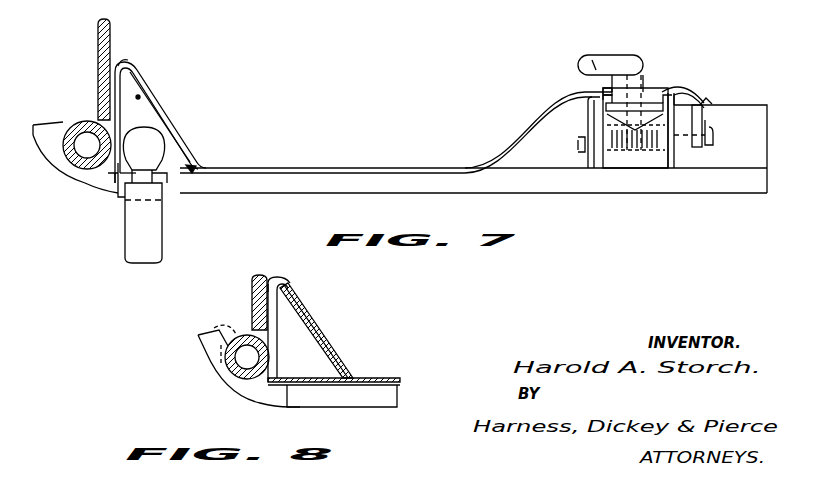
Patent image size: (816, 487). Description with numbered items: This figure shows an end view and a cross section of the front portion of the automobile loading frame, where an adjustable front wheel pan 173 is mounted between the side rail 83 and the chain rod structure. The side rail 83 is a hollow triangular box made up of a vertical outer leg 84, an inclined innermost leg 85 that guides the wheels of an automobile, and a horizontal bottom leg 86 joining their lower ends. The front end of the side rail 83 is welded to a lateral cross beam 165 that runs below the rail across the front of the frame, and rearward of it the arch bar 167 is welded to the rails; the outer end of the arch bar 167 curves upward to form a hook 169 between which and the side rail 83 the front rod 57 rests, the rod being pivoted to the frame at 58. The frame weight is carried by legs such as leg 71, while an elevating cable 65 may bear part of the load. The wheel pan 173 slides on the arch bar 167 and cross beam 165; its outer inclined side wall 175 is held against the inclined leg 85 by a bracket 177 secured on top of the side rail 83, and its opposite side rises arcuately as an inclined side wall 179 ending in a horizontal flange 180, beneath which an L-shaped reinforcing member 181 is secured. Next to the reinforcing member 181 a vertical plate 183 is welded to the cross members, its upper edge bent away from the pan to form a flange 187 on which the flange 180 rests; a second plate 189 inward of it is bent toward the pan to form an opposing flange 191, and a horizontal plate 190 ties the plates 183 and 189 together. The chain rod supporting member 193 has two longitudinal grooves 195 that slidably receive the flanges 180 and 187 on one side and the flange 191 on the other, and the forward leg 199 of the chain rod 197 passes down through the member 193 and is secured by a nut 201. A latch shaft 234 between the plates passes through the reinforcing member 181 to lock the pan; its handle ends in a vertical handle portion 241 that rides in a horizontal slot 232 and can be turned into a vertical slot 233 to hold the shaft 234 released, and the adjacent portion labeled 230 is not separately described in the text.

In FIG. 8, the front rod 57 is at (220, 326).
In FIG. 7, the pivotal connection 58 is at (67, 137).
In FIG. 7, the elevating cable 65 is at (97, 33).
In FIG. 8, the elevating cable 65 is at (252, 290).
In FIG. 7, the leg 71 is at (127, 249).
In FIG. 7, the side rail 83 is at (181, 178).
In FIG. 8, the side rail 83 is at (290, 276).
In FIG. 7, the outer leg 84 is at (114, 74).
In FIG. 8, the outer leg 84 is at (277, 332).
In FIG. 7, the innermost leg 85 is at (136, 78).
In FIG. 8, the innermost leg 85 is at (305, 338).
In FIG. 8, the bottom leg 86 is at (287, 405).
In FIG. 7, the lateral cross beam 165 is at (248, 190).
In FIG. 8, the arch bar 167 is at (387, 393).
In FIG. 7, the hook 169 is at (30, 128).
In FIG. 8, the hook 169 is at (200, 357).
In FIG. 7, the front wheel pan 173 is at (373, 168).
In FIG. 8, the front wheel pan 173 is at (397, 378).
In FIG. 7, the outer inclined side wall 175 is at (170, 113).
In FIG. 8, the outer inclined side wall 175 is at (337, 350).
In FIG. 7, the bracket 177 is at (131, 66).
In FIG. 7, the inclined side wall 179 is at (542, 115).
In FIG. 7, the horizontal flange 180 is at (590, 92).
In FIG. 7, the L-shaped reinforcing member 181 is at (546, 160).
In FIG. 7, the vertical longitudinally extending plate 183 is at (597, 170).
In FIG. 7, the flange 187 is at (600, 93).
In FIG. 7, the second plate 189 is at (677, 168).
In FIG. 7, the horizontal plate 190 is at (607, 132).
In FIG. 7, the flange 191 is at (662, 90).
In FIG. 7, the chain rod supporting member 193 is at (650, 82).
In FIG. 7, the longitudinal groove 195 is at (615, 92).
In FIG. 7, the chain rod 197 is at (607, 57).
In FIG. 7, the forward leg 199 is at (650, 80).
In FIG. 7, the nut 201 is at (703, 108).
In FIG. 7, the end block 230 is at (753, 163).
In FIG. 7, the slot 232 is at (703, 147).
In FIG. 7, the vertical slot 233 is at (713, 133).
In FIG. 7, the shaft 234 is at (580, 147).
In FIG. 7, the vertical handle portion 241 is at (690, 117).